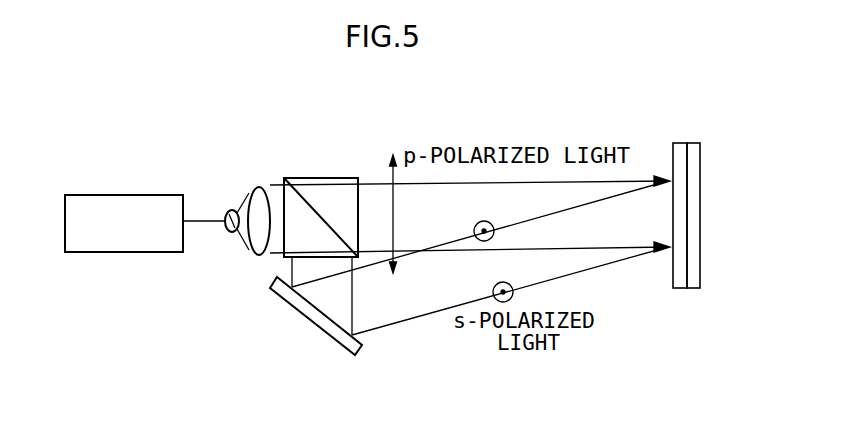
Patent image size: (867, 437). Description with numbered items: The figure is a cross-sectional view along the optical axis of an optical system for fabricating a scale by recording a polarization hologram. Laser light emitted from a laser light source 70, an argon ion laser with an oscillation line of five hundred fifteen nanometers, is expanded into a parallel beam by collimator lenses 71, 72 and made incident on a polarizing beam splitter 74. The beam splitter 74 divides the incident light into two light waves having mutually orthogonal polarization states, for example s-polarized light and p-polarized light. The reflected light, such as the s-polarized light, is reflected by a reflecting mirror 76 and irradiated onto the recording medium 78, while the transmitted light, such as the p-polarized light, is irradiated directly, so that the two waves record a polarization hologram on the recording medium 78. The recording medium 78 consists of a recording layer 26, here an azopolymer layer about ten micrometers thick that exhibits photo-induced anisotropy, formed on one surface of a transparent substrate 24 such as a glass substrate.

The laser light source 70 is at (117, 196).
The collimator lens 71 is at (228, 211).
The collimator lens 72 is at (258, 188).
The polarizing beam splitter 74 is at (337, 178).
The reflecting mirror 76 is at (322, 331).
The recording medium 78 is at (675, 266).
The recording layer 26 is at (678, 289).
The transparent substrate 24 is at (705, 245).